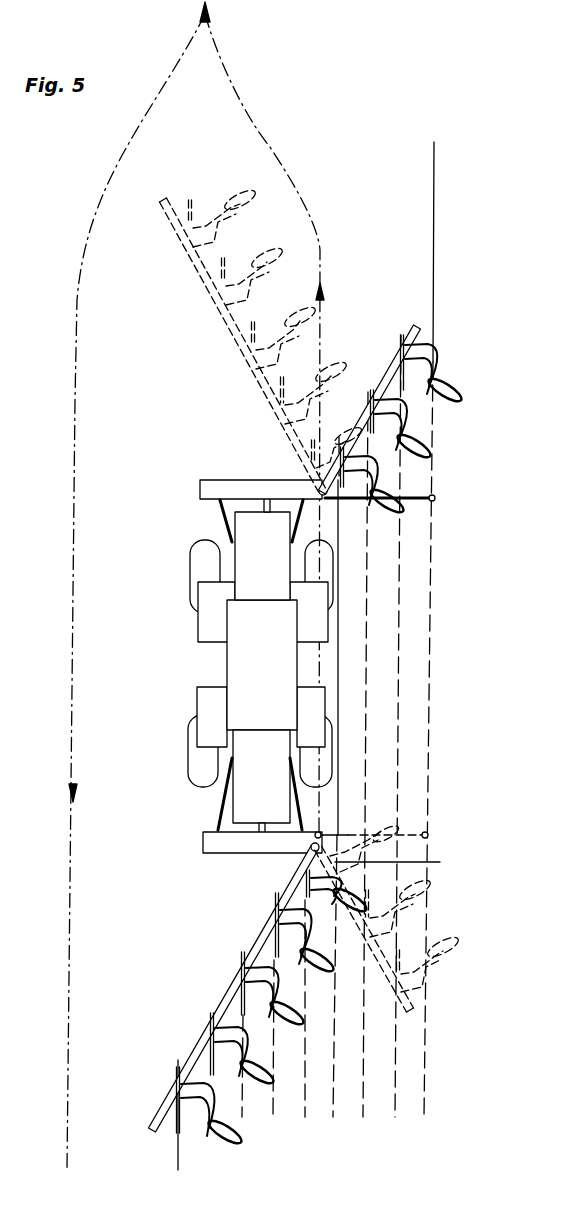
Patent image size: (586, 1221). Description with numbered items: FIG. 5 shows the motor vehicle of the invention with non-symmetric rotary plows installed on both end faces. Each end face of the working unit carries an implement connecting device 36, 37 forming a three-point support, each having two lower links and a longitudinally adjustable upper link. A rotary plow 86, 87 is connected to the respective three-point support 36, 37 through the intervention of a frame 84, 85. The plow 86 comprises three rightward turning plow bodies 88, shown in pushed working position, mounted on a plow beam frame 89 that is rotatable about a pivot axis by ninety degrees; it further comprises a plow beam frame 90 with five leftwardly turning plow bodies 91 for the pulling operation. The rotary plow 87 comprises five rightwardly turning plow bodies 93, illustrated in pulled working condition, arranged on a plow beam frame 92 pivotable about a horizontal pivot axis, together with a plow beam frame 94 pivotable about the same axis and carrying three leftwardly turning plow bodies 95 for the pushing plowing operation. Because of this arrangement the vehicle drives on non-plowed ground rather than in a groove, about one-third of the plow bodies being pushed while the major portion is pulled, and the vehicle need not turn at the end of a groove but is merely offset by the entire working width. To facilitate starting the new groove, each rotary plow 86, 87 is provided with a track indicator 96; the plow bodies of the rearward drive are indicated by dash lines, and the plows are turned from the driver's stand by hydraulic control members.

The implement connecting device 36 is at (264, 508).
The implement connecting device 37 is at (258, 829).
The frame 84 is at (235, 490).
The frame 85 is at (217, 845).
The rotary plow 86 is at (318, 485).
The rotary plow 87 is at (405, 862).
The plow bodies 88 is at (420, 366).
The plow beam frame 89 is at (383, 393).
The plow beam frame 90 is at (237, 327).
The plow bodies 91 is at (237, 291).
The plow beam frame 92 is at (262, 940).
The plow bodies 93 is at (223, 1040).
The plow beam frame 94 is at (378, 948).
The plow bodies 95 is at (410, 978).
The track indicator 96 is at (352, 497).